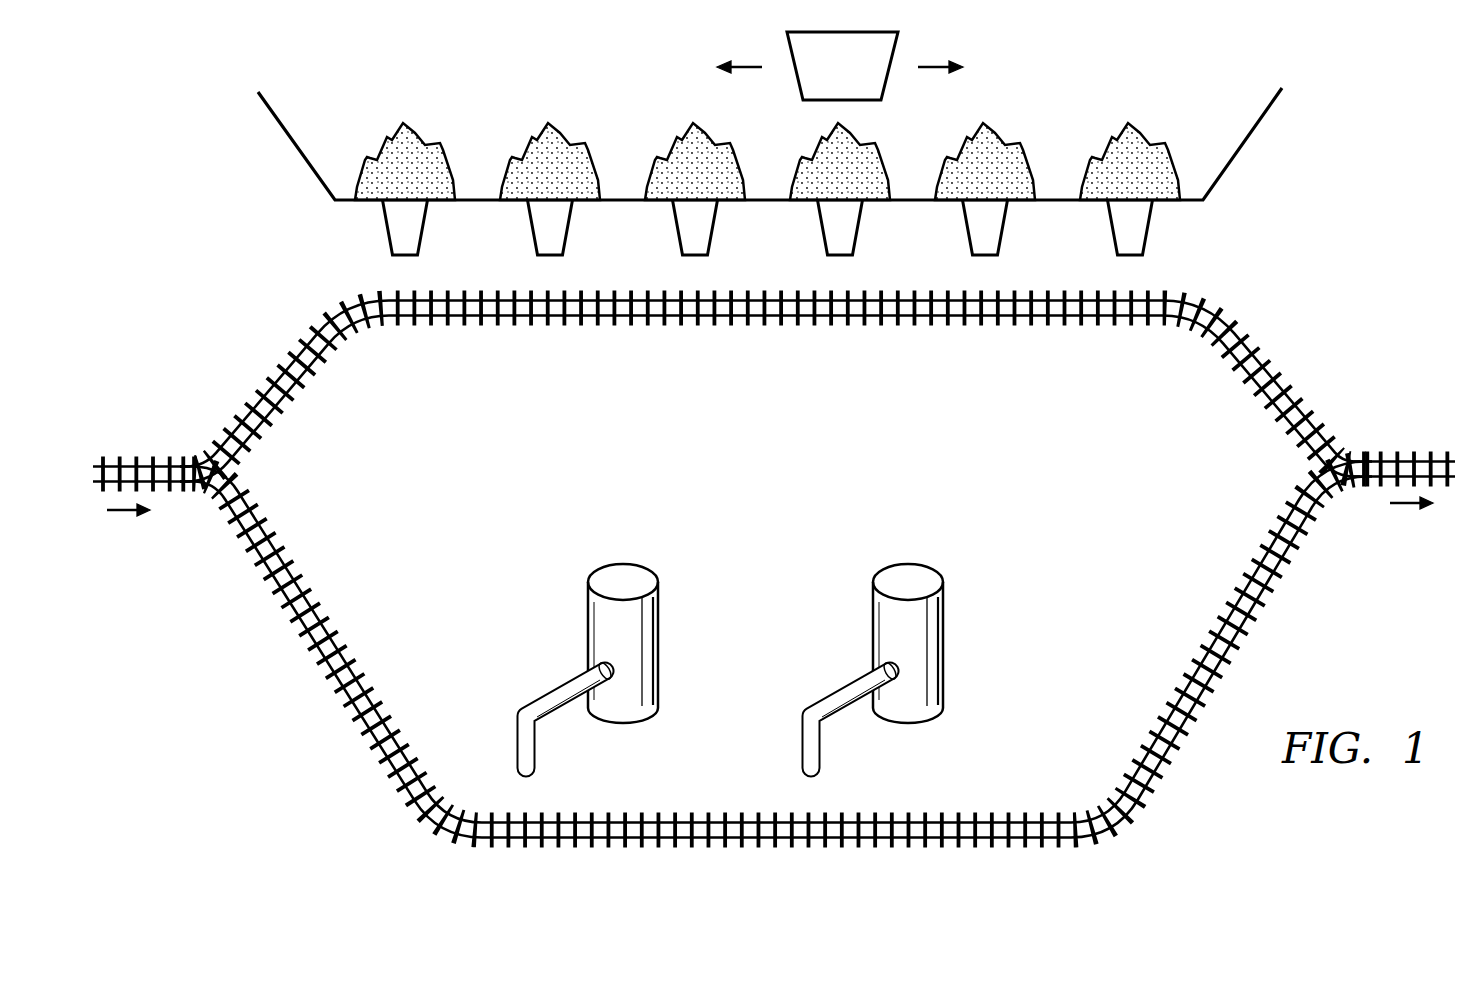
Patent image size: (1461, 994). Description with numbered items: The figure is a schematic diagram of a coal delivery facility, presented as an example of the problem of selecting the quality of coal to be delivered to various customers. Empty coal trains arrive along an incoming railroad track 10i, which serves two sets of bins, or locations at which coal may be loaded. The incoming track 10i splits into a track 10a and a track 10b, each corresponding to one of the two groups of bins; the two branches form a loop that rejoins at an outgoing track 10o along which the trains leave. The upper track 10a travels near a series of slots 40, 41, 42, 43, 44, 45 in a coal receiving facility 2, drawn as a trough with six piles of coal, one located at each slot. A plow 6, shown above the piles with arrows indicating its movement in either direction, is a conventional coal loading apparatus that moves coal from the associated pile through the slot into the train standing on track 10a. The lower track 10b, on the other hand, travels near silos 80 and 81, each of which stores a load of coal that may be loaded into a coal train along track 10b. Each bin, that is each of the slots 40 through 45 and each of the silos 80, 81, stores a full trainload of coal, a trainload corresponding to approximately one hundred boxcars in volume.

The coal receiving facility 2 is at (1242, 143).
The plow 6 is at (833, 79).
The slot 40 is at (387, 228).
The slot 41 is at (532, 228).
The slot 42 is at (677, 228).
The slot 43 is at (822, 228).
The slot 44 is at (967, 228).
The slot 45 is at (1112, 228).
The incoming railroad track 10i is at (145, 458).
The outgoing railroad track 10o is at (1418, 447).
The track 10a is at (555, 327).
The track 10b is at (312, 650).
The silo 80 is at (623, 572).
The silo 81 is at (908, 572).